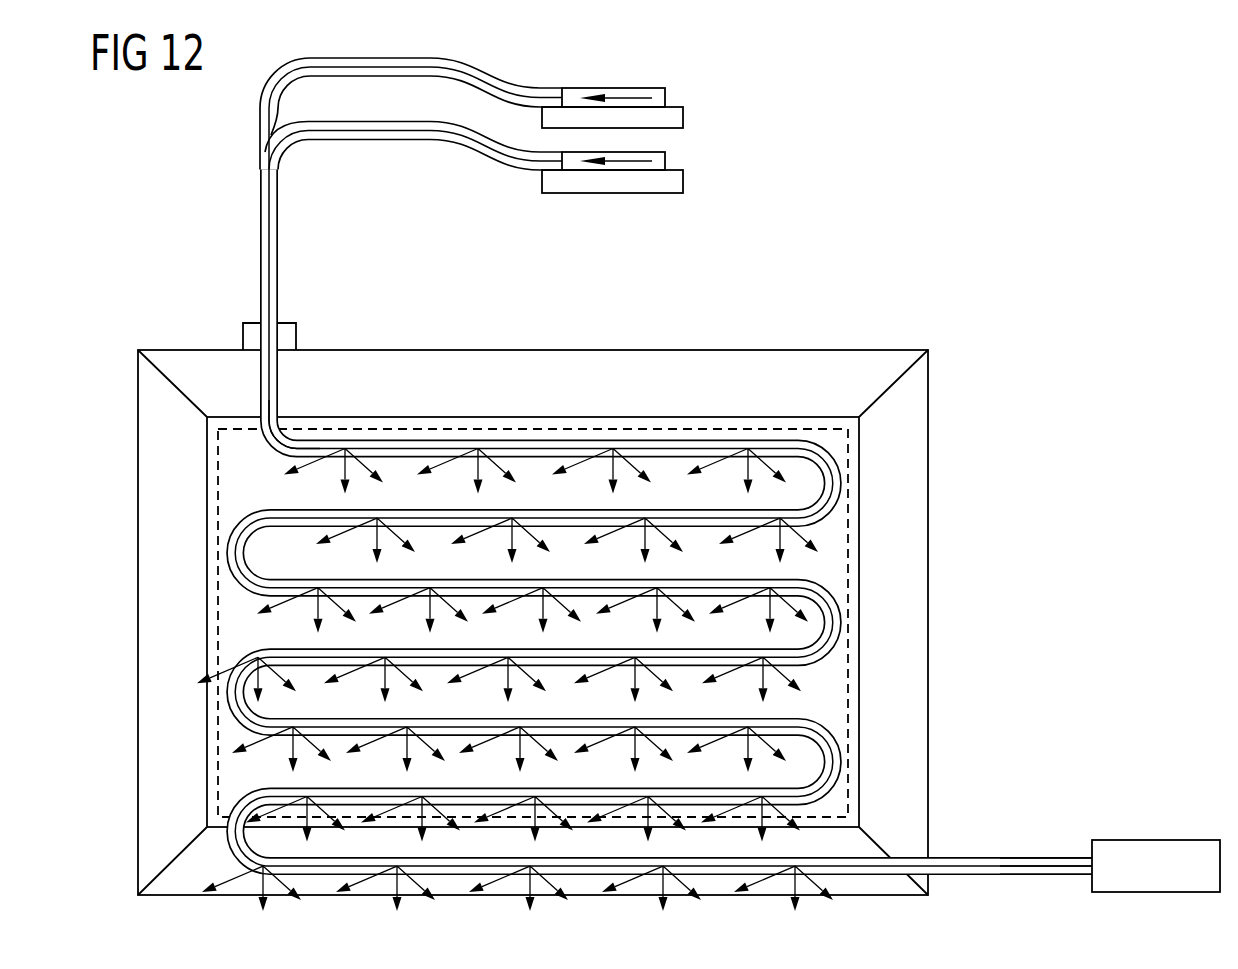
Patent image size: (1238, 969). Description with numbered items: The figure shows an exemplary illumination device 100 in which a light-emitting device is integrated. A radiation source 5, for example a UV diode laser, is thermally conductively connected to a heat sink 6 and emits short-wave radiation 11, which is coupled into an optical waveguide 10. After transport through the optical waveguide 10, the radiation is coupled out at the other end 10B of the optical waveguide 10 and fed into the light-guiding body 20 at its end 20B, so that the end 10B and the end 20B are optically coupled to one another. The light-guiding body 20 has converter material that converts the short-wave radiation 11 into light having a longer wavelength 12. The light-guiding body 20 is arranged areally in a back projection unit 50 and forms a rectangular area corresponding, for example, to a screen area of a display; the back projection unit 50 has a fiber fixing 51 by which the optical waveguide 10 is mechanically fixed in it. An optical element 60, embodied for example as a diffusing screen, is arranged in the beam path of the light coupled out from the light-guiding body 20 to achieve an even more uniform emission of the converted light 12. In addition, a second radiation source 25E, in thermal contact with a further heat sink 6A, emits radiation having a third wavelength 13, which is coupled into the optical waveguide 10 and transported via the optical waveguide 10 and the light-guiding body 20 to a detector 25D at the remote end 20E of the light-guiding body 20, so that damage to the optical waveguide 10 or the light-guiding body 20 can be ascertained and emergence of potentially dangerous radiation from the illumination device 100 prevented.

The illumination device 100 is at (813, 286).
The back projection unit 50 is at (918, 622).
The optical element 60 is at (788, 430).
The fiber fixing 51 is at (296, 335).
The optical waveguide 10 is at (260, 232).
The light-guiding body 20 is at (847, 482).
The second end of the optical waveguide 10B is at (333, 388).
The end of the light-guiding body 20B is at (325, 401).
The remote end of the light-guiding body 20E is at (1090, 856).
The detector 25D is at (1147, 840).
The light having a longer wavelength 12 is at (310, 603).
The radiation having a third wavelength 13 is at (618, 98).
The short-wave radiation 11 is at (622, 163).
The second radiation source 25E is at (655, 97).
The further heat sink 6A is at (670, 120).
The radiation source 5 is at (655, 162).
The heat sink 6 is at (670, 182).